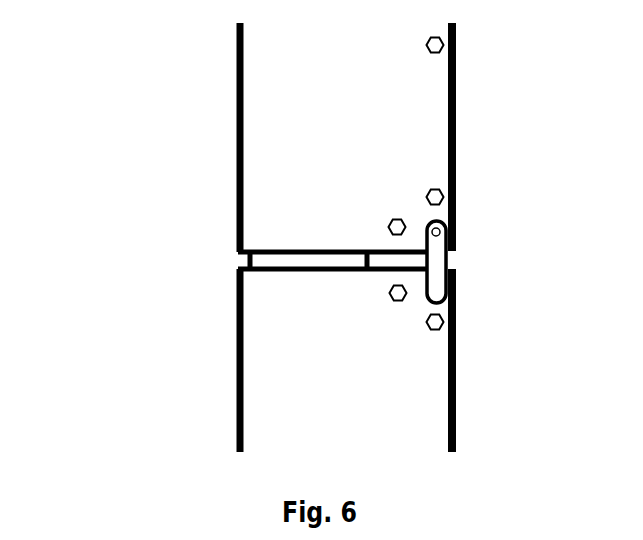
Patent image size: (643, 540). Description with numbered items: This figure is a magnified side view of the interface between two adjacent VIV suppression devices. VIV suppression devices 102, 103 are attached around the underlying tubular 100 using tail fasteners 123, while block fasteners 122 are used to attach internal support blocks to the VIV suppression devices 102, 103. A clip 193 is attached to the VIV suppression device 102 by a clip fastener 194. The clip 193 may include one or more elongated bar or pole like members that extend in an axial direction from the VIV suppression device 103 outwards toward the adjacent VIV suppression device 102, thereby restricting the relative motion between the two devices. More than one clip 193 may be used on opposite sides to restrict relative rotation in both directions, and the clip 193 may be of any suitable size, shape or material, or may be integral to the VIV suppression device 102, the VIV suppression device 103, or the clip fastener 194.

The underlying tubular 100 is at (226, 261).
The VIV suppression device 102 is at (225, 121).
The VIV suppression device 103 is at (225, 386).
The block fastener 122 is at (371, 221).
The tail fastener 123 is at (461, 61).
The clip 193 is at (460, 264).
The clip fastener 194 is at (458, 228).